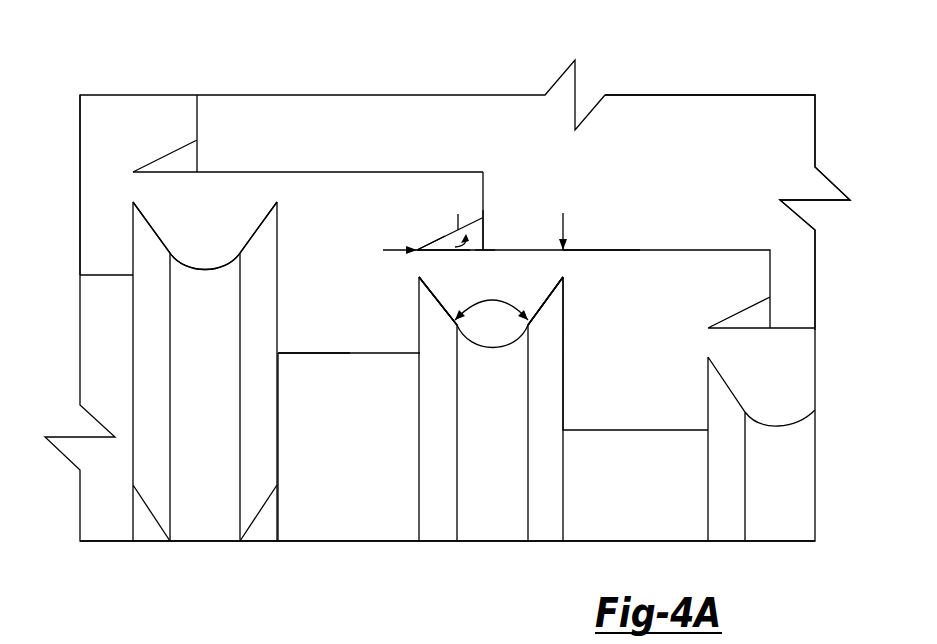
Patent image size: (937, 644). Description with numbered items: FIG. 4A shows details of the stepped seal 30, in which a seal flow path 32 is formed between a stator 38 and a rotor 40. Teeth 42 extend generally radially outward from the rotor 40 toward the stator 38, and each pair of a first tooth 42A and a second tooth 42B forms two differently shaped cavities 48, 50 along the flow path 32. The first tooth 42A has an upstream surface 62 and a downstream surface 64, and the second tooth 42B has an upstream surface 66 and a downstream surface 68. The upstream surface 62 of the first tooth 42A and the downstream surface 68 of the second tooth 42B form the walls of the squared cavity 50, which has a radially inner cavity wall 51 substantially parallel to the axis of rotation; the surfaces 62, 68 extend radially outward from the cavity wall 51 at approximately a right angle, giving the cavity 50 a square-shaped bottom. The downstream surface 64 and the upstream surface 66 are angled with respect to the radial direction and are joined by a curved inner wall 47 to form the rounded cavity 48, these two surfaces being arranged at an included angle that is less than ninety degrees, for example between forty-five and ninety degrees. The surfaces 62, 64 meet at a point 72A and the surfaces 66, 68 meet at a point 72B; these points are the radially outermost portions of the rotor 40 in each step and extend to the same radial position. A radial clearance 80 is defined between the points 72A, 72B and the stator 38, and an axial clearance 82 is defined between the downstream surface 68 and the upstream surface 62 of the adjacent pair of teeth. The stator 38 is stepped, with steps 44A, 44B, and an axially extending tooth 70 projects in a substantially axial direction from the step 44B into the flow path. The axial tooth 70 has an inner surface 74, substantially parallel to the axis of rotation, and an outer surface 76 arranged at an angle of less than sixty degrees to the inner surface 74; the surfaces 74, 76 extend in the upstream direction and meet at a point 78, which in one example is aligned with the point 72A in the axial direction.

The stepped seal 30 is at (449, 70).
The seal flow path 32 is at (98, 160).
The stator 38 is at (731, 122).
The rotor 40 is at (263, 526).
The teeth 42 is at (267, 233).
The first tooth 42A is at (146, 233).
The second tooth 42B is at (257, 285).
The first side wall 44A is at (277, 338).
The step 44B is at (485, 185).
The curved inner wall 47 is at (218, 270).
The cavity 48 is at (210, 213).
The cavity 50 is at (315, 327).
The radially inner cavity wall 51 is at (353, 353).
The upstream surface 62 is at (418, 335).
The downstream surface 64 is at (433, 297).
The upstream surface 66 is at (548, 297).
The downstream surface 68 is at (565, 343).
The axially extending tooth 70 is at (438, 244).
The point 72A is at (423, 284).
The point 72B is at (567, 272).
The inner surface 74 is at (485, 250).
The outer surface 76 is at (485, 223).
The point 78 is at (414, 249).
The radial clearance 80 is at (567, 222).
The axial clearance 82 is at (393, 247).